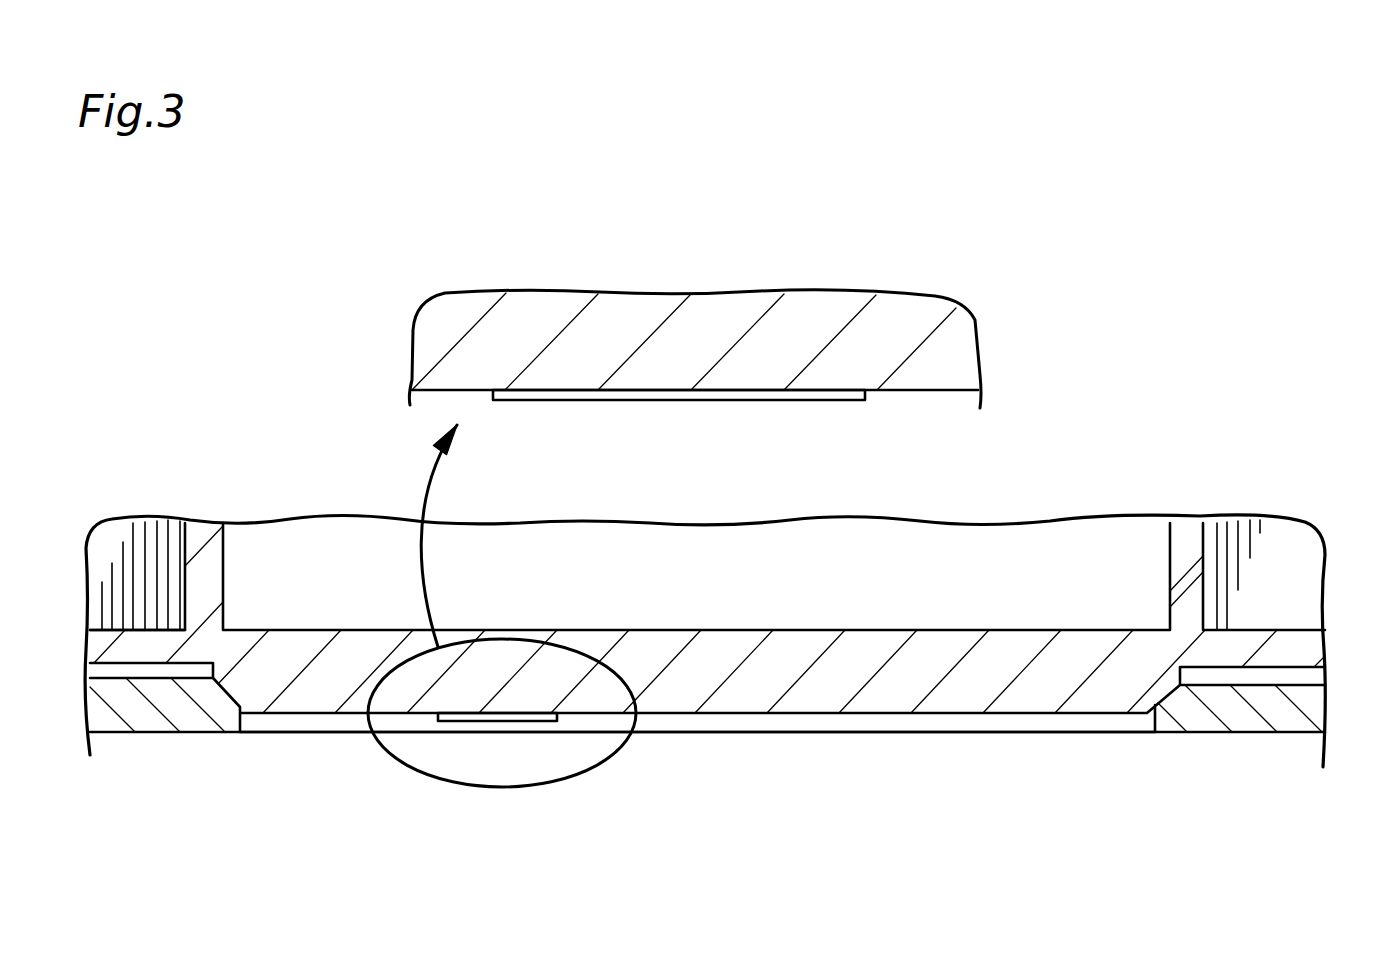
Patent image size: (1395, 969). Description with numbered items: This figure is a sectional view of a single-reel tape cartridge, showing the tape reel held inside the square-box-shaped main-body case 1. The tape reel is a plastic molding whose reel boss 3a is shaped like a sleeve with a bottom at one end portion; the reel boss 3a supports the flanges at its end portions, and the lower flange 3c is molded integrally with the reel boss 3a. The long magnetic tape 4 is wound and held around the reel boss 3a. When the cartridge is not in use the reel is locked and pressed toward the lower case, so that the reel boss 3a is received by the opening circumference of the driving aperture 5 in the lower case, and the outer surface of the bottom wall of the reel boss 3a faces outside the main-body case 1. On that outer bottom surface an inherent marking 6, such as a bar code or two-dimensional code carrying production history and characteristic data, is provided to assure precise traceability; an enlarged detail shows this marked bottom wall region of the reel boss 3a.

The main-body case 1 is at (130, 752).
The reel boss 3a is at (888, 340).
The lower flange 3c is at (1272, 658).
The magnetic tape 4 is at (140, 557).
The driving aperture 5 is at (1148, 722).
The inherent marking 6 is at (708, 400).